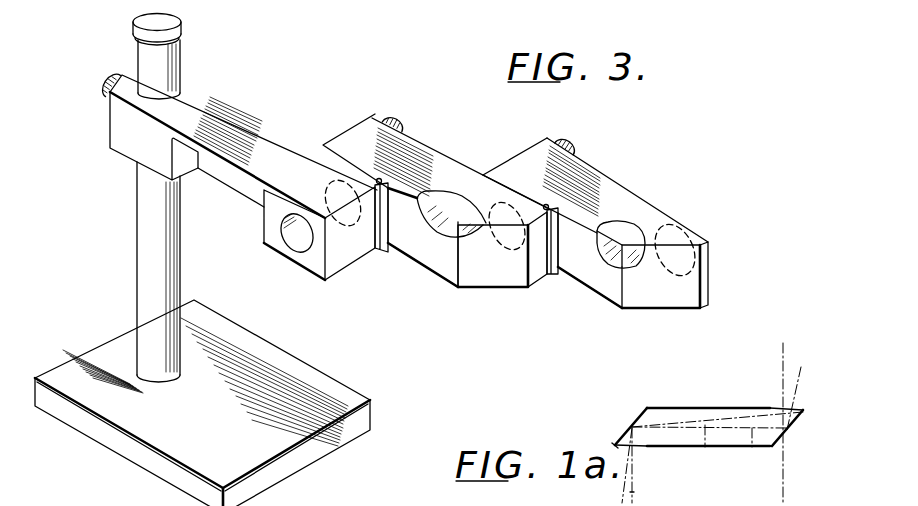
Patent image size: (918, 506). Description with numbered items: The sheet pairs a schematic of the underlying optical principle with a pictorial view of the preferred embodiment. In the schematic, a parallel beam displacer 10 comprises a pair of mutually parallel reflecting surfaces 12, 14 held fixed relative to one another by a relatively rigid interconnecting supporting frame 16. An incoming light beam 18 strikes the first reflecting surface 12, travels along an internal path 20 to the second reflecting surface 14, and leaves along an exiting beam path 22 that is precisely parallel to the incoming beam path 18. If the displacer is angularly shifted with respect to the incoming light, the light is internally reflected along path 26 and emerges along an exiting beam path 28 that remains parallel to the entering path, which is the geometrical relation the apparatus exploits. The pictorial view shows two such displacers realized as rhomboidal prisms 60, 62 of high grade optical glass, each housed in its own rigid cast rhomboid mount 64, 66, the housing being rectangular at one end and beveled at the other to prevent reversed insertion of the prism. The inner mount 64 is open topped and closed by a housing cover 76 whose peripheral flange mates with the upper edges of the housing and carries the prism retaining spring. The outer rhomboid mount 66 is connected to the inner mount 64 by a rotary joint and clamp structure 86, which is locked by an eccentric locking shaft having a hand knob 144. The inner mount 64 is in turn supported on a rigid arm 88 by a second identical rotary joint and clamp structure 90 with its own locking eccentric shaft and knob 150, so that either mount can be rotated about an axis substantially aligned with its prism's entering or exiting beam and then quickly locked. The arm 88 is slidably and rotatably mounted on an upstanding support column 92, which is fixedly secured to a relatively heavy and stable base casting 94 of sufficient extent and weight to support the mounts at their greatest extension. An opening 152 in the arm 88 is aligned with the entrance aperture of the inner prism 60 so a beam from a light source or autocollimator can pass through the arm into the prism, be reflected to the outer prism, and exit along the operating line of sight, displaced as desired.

In FIG. 3, the support column 92 is at (140, 238).
In FIG. 3, the base casting 94 is at (215, 435).
In FIG. 3, the rigid arm 88 is at (260, 127).
In FIG. 3, the opening 152 is at (297, 246).
In FIG. 3, the rotary joint and clamp structure 90 is at (383, 250).
In FIG. 3, the locking eccentric shaft and knob 150 is at (388, 114).
In FIG. 3, the housing cover 76 is at (442, 162).
In FIG. 3, the rhomboid mount 64 is at (450, 273).
In FIG. 3, the rhomboidal prism 60 is at (440, 197).
In FIG. 3, the rotary joint and clamp structure 86 is at (557, 275).
In FIG. 3, the hand knob 144 is at (565, 140).
In FIG. 3, the rhomboid mount 66 is at (610, 183).
In FIG. 3, the rhomboidal prism 62 is at (634, 211).
In FIG. 1A, the beam displacer 10 is at (679, 376).
In FIG. 1A, the reflecting surface 12 is at (630, 425).
In FIG. 1A, the reflecting surface 14 is at (790, 428).
In FIG. 1A, the supporting frame 16 is at (698, 407).
In FIG. 1A, the incoming light beam 18 is at (640, 492).
In FIG. 1A, the internal path 20 is at (752, 448).
In FIG. 1A, the exiting beam path 22 is at (782, 382).
In FIG. 1A, the internal path 26 is at (704, 447).
In FIG. 1A, the exiting beam path 28 is at (801, 379).